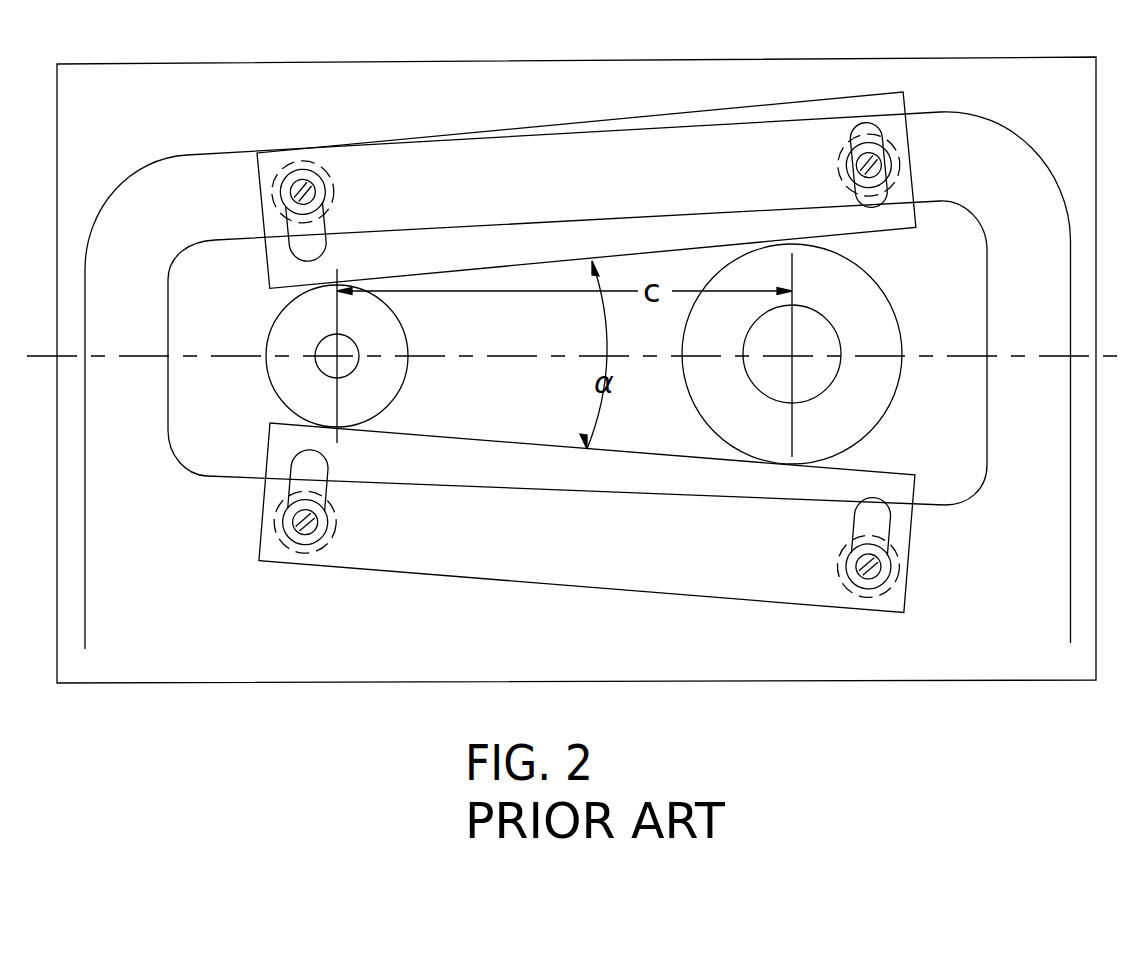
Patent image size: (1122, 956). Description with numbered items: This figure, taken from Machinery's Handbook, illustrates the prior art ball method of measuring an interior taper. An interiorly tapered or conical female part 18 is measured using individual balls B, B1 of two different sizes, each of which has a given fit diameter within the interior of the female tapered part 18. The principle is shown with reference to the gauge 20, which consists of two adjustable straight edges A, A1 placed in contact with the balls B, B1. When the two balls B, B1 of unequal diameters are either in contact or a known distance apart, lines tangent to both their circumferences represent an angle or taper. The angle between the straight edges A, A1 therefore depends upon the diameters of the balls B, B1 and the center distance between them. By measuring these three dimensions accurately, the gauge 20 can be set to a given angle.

The gauge 20 is at (138, 178).
The female tapered part 18 is at (970, 225).
The adjustable straight edge A is at (586, 190).
The adjustable straight edge A1 is at (587, 517).
The ball B is at (403, 325).
The ball B1 is at (882, 283).